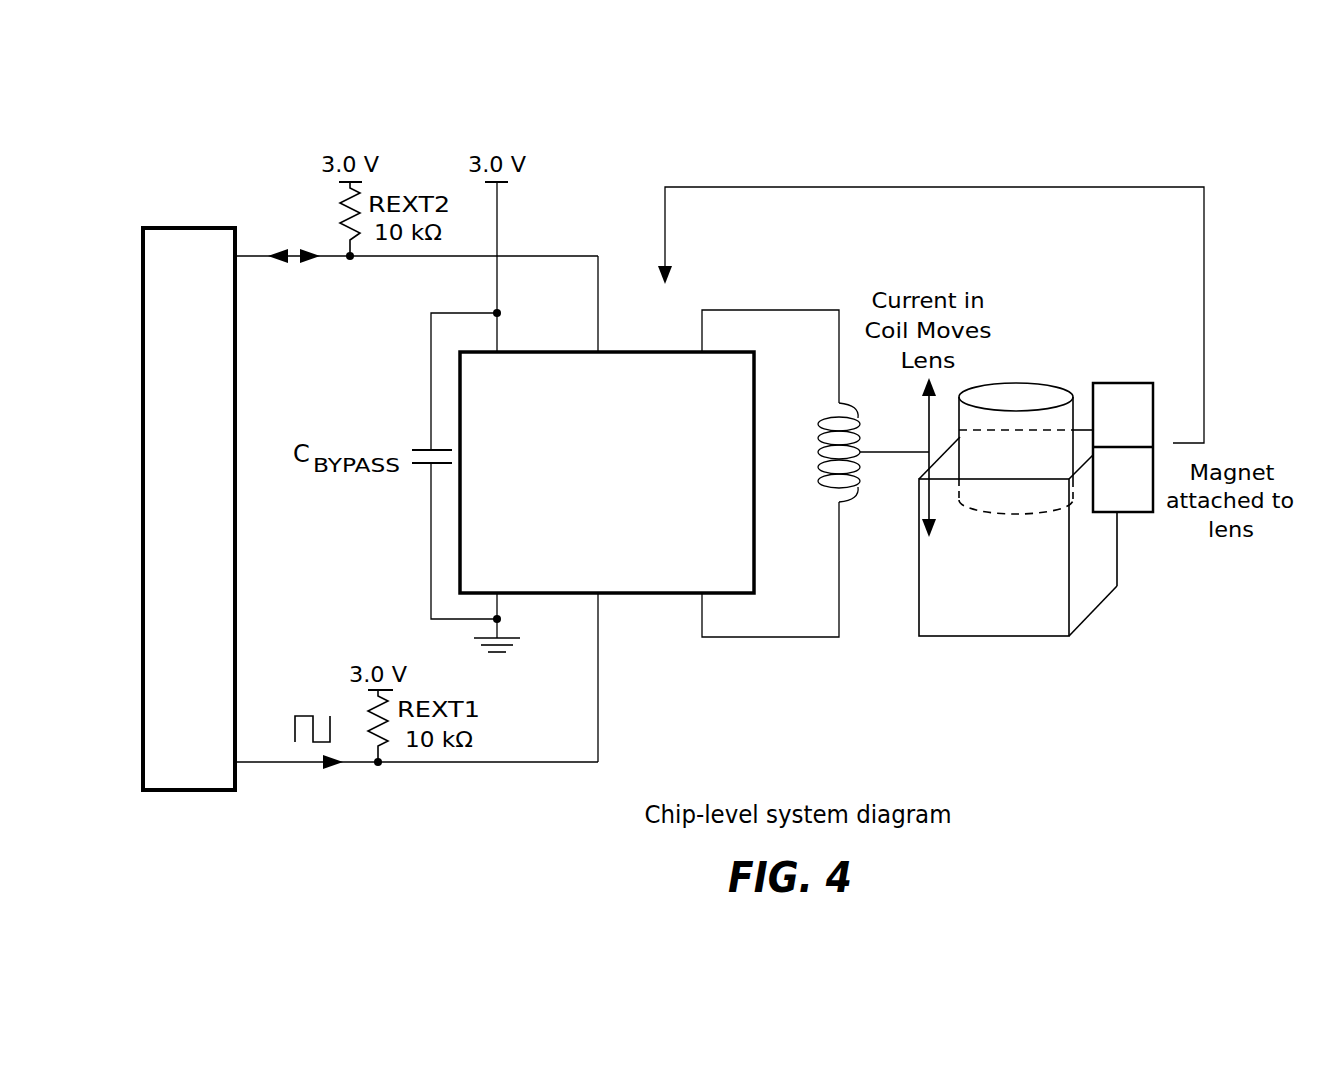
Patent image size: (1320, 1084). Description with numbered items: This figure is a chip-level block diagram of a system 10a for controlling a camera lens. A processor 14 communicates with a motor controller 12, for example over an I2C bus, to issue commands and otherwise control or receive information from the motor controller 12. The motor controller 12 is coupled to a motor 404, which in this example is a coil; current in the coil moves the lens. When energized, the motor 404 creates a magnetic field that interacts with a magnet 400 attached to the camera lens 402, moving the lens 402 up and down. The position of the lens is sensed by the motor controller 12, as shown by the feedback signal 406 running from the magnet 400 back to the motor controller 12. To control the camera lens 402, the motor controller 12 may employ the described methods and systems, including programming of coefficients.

The system 10a is at (1148, 105).
The motor controller 12 is at (592, 488).
The processor 14 is at (174, 488).
The magnet 400 is at (1125, 383).
The camera lens 402 is at (994, 470).
The motor 404 is at (818, 452).
The feedback signal 406 is at (1204, 317).